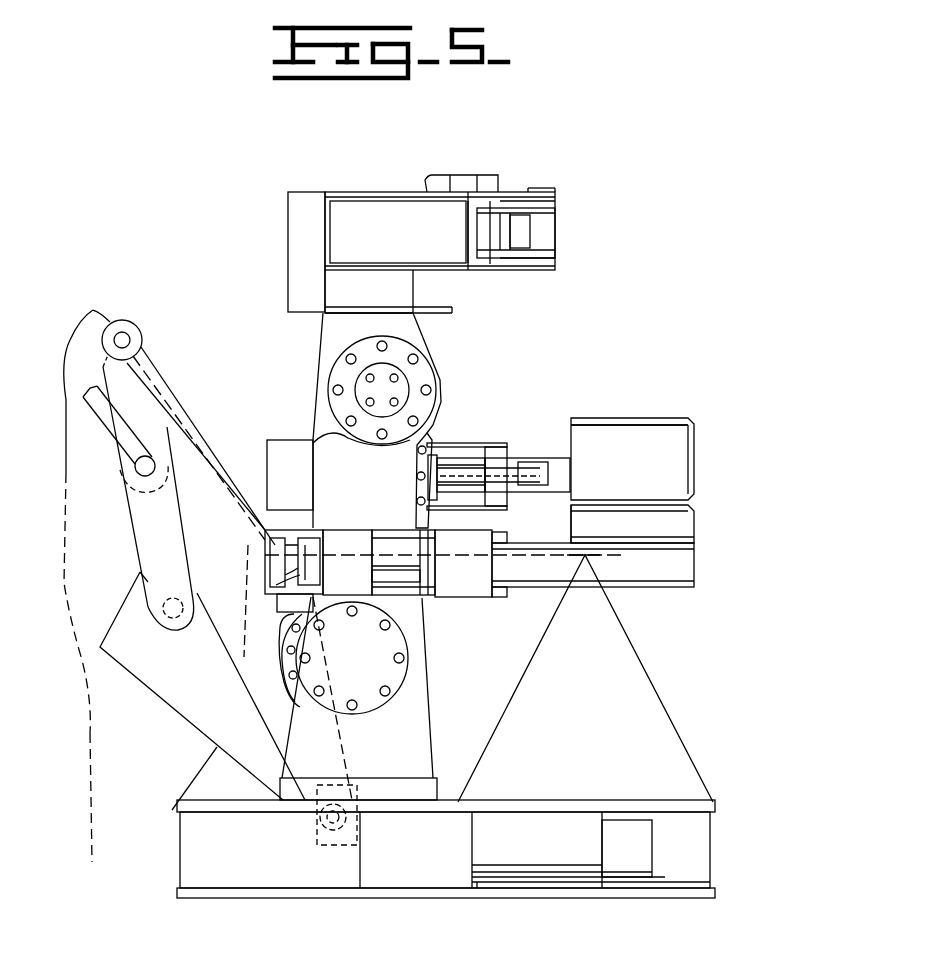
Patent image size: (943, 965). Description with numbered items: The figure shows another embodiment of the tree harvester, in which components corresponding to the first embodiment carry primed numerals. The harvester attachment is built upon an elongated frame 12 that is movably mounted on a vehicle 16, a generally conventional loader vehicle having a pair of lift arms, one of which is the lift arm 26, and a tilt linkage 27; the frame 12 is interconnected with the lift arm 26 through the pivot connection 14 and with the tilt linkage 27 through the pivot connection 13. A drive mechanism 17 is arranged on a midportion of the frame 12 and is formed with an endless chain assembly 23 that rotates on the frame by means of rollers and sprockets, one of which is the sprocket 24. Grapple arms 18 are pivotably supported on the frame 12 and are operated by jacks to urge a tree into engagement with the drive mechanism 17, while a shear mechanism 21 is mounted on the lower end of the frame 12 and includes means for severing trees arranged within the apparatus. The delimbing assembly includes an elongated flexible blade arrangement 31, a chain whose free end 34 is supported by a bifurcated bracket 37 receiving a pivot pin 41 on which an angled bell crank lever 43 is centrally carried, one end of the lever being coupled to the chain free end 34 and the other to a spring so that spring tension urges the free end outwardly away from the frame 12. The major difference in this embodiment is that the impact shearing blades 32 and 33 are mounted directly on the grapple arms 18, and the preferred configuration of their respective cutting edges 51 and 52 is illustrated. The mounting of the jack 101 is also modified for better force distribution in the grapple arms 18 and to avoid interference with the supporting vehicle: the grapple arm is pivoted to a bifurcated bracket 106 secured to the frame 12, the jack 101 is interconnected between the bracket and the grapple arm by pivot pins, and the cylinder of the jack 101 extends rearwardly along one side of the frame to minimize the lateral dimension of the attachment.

The elongated frame 12 is at (338, 332).
The pivot connection 13 is at (262, 582).
The pivot connection 14 is at (330, 820).
The vehicle 16 is at (98, 298).
The drive mechanism 17 is at (452, 385).
The grapple arms 18 is at (548, 460).
The shear mechanism 21 is at (725, 884).
The endless chain assembly 23 is at (432, 448).
The sprocket 24 is at (282, 655).
The lift arm 26 is at (202, 686).
The tilt linkage 27 is at (152, 320).
The elongated flexible blade arrangement 31 is at (567, 225).
The impact shearing blade 32 is at (632, 459).
The impact shearing blade 33 is at (600, 527).
The chain free end 34 is at (463, 183).
The bracket 37 is at (398, 232).
The pivot pin 41 is at (547, 237).
The bell crank lever 43 is at (435, 232).
The cutting edge 51 is at (676, 533).
The cutting edge 52 is at (676, 455).
The jack 101 is at (400, 583).
The bifurcated bracket 106 is at (470, 580).